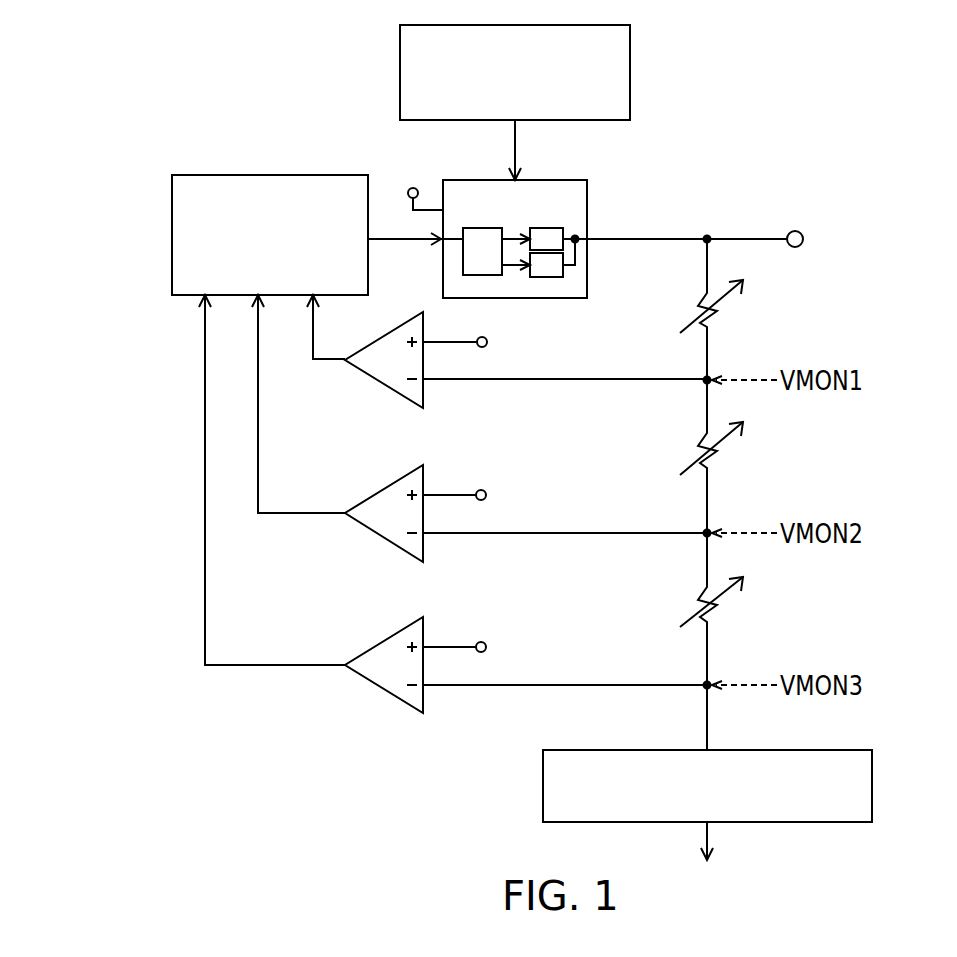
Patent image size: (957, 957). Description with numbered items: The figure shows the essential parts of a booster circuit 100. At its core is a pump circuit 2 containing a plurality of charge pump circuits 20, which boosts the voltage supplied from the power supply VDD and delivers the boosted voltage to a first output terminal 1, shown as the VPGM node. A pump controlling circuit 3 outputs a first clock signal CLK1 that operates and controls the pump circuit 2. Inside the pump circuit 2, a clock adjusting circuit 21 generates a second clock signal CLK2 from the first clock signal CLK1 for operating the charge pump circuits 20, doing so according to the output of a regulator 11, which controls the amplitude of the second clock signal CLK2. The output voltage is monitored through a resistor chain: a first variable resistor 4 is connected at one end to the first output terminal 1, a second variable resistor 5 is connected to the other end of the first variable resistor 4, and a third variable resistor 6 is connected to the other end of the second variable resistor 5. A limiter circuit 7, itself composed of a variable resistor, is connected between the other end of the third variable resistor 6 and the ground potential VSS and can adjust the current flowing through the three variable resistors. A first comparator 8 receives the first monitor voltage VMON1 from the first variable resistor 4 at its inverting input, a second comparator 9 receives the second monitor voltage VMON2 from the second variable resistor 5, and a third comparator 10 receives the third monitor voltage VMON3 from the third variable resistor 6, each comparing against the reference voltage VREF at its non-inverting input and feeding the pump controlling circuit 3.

The first output terminal 1 is at (795, 231).
The pump circuit 2 is at (588, 252).
The pump controlling circuit 3 is at (172, 238).
The first variable resistor 4 is at (697, 310).
The second variable resistor 5 is at (697, 452).
The third variable resistor 6 is at (697, 605).
The limiter circuit 7 is at (872, 786).
The first comparator 8 is at (385, 333).
The second comparator 9 is at (378, 490).
The third comparator 10 is at (378, 645).
The regulator 11 is at (631, 75).
The charge pump circuit 20 is at (575, 230).
The clock adjusting circuit 21 is at (463, 256).
The booster circuit 100 is at (470, 820).